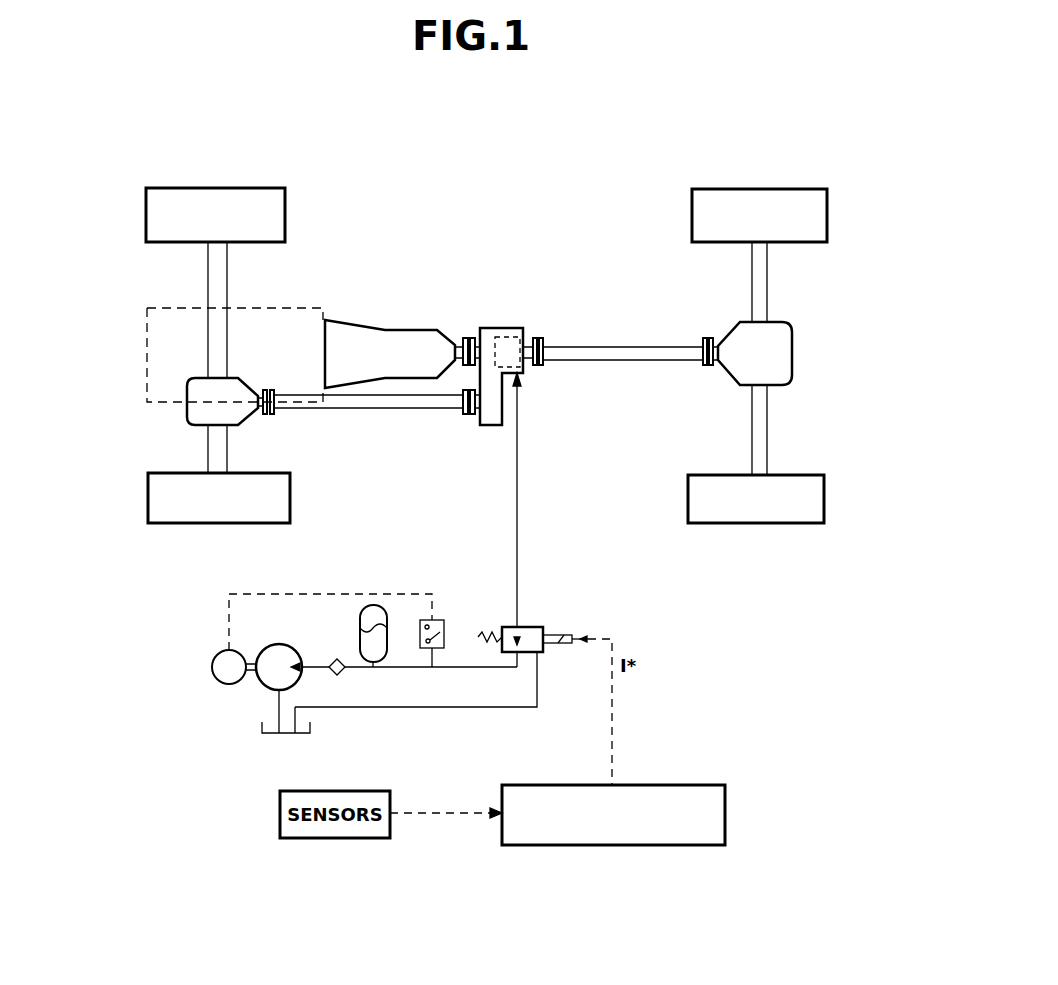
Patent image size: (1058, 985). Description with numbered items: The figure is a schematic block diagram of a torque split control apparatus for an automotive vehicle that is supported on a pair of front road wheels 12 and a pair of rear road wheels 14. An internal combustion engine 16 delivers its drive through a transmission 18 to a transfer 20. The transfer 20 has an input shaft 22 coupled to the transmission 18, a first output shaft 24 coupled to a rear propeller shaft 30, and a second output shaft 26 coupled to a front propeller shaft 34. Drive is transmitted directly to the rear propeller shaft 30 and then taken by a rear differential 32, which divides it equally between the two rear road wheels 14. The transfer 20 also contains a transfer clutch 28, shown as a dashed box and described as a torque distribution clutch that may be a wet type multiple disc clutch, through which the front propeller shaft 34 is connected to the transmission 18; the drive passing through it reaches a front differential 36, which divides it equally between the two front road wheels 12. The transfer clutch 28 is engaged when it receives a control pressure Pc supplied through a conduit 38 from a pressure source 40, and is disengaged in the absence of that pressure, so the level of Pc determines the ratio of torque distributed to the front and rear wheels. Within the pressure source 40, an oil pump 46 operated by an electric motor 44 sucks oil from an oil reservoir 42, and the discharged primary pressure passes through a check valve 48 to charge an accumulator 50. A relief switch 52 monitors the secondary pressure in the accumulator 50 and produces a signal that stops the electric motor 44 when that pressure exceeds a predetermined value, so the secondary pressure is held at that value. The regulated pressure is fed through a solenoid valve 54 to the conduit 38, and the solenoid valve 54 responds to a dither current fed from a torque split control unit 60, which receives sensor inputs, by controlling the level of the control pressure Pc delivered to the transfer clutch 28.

The front road wheels 12 is at (285, 207).
The rear road wheels 14 is at (793, 190).
The internal combustion engine 16 is at (290, 308).
The transmission 18 is at (368, 328).
The transfer 20 is at (502, 328).
The input shaft 22 is at (468, 338).
The first output shaft 24 is at (540, 368).
The second output shaft 26 is at (476, 413).
The transfer clutch 28 is at (520, 337).
The rear propeller shaft 30 is at (655, 355).
The rear differential 32 is at (788, 322).
The front propeller shaft 34 is at (393, 397).
The front differential 36 is at (187, 420).
The conduit 38 is at (517, 455).
The pressure source 40 is at (605, 609).
The oil reservoir 42 is at (280, 737).
The electric motor 44 is at (238, 650).
The oil pump 46 is at (285, 645).
The check valve 48 is at (340, 659).
The accumulator 50 is at (380, 605).
The relief switch 52 is at (438, 620).
The solenoid valve 54 is at (512, 627).
The torque split control unit 60 is at (548, 785).